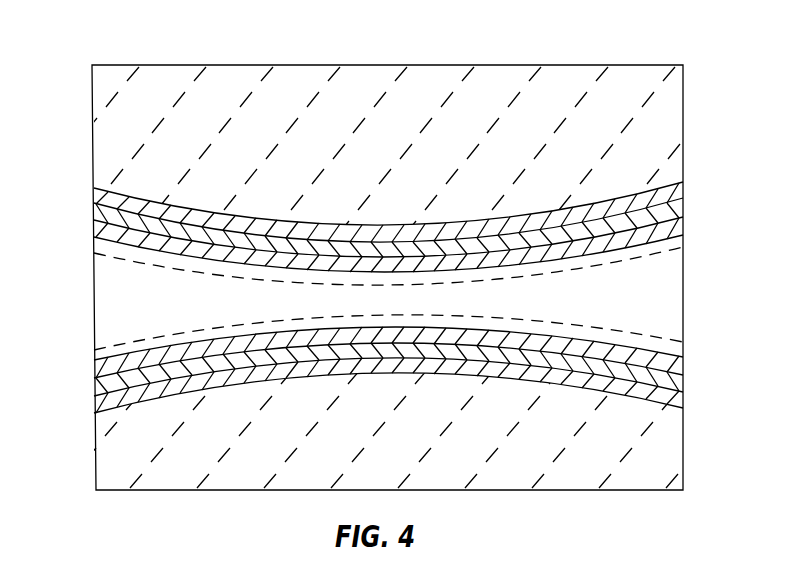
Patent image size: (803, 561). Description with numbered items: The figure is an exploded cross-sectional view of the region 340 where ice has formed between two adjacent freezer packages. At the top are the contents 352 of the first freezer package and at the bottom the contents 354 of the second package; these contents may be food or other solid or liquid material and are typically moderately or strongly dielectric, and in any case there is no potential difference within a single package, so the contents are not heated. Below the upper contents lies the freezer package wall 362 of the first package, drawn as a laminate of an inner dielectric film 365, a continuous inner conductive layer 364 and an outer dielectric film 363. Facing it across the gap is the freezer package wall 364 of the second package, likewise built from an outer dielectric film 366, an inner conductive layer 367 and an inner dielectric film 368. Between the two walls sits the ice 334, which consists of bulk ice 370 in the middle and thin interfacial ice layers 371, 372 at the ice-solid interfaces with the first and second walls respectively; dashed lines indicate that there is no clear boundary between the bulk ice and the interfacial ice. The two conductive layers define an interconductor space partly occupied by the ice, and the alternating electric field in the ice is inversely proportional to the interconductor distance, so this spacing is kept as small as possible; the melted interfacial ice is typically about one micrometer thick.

The region 340 is at (122, 65).
The contents of freezer package 352 is at (465, 144).
The contents of freezer package 354 is at (427, 440).
The freezer package wall 362 is at (88, 182).
The outer dielectric film 363 is at (676, 226).
The inner conductive layer 364 is at (676, 207).
The inner dielectric film 365 is at (676, 190).
The outer dielectric film 366 is at (672, 367).
The inner conductive layer 367 is at (672, 382).
The inner dielectric film 368 is at (673, 398).
The bulk ice 370 is at (252, 308).
The interfacial ice layer 371 is at (518, 272).
The interfacial ice layer 372 is at (648, 256).
The ice 334 is at (118, 304).